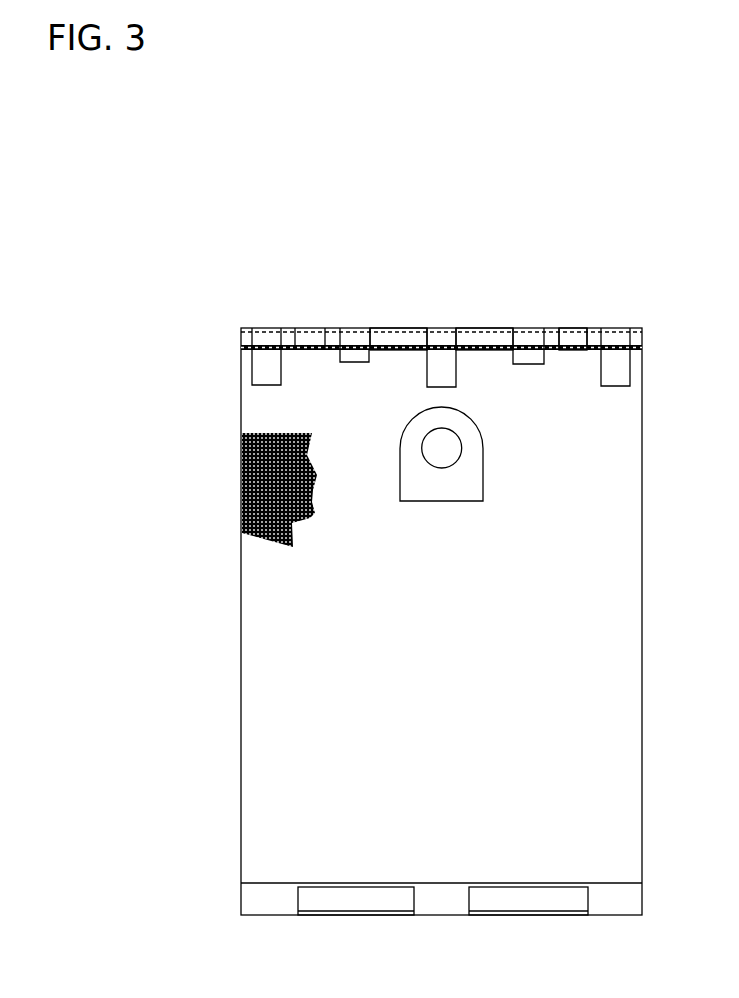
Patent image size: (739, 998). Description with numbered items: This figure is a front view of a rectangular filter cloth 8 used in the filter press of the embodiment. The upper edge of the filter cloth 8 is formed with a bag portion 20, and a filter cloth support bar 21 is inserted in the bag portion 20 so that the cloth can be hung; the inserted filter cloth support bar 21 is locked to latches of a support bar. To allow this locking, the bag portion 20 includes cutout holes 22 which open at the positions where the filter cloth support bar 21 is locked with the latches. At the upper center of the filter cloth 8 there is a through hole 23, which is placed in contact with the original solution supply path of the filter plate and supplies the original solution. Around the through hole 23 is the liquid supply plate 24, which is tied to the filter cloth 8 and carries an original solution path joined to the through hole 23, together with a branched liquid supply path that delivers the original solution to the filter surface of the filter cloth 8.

The filter cloth 8 is at (629, 575).
The bag portion 20 is at (392, 330).
The filter cloth support bar 21 is at (572, 333).
The cutout holes 22 is at (447, 333).
The through hole 23 is at (453, 445).
The liquid supply plate 24 is at (478, 465).